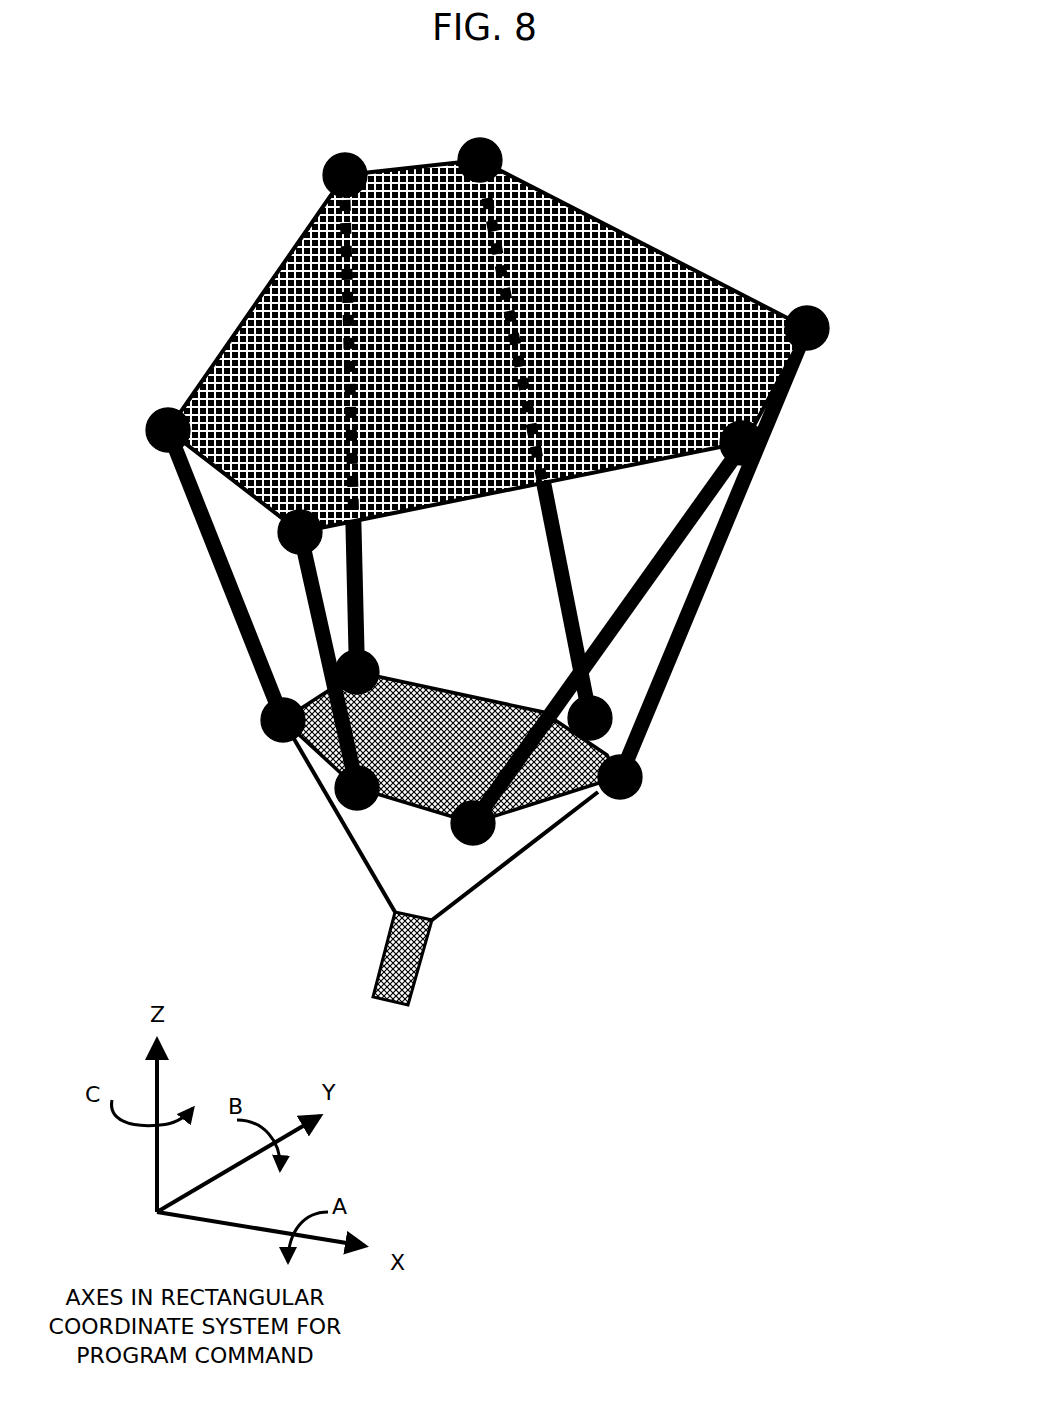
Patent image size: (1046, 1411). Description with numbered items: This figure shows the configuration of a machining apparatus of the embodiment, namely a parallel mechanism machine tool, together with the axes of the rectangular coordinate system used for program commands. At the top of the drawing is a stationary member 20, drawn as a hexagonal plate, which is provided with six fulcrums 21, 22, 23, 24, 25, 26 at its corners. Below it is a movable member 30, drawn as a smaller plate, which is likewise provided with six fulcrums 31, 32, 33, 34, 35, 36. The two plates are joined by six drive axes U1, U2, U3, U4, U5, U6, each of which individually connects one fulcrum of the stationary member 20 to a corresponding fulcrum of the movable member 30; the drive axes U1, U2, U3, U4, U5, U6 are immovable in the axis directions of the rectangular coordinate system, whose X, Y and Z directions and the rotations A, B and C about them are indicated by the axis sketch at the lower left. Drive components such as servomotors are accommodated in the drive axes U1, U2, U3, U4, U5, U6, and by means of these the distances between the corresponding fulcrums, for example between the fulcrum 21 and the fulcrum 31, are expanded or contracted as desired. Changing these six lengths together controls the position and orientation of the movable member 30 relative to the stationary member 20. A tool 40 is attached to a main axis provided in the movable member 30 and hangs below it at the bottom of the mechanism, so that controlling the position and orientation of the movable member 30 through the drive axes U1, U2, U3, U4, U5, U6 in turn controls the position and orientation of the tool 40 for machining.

The stationary member 20 is at (598, 232).
The fulcrum 21 is at (155, 410).
The fulcrum 22 is at (278, 543).
The fulcrum 23 is at (762, 452).
The fulcrum 24 is at (828, 322).
The fulcrum 25 is at (503, 152).
The fulcrum 26 is at (325, 168).
The movable member 30 is at (455, 697).
The fulcrum 31 is at (262, 718).
The fulcrum 32 is at (340, 792).
The fulcrum 33 is at (478, 848).
The fulcrum 34 is at (614, 797).
The fulcrum 35 is at (613, 712).
The fulcrum 36 is at (385, 660).
The tool 40 is at (414, 968).
The drive axis U1 is at (215, 562).
The drive axis U2 is at (312, 618).
The drive axis U3 is at (636, 572).
The drive axis U4 is at (692, 628).
The drive axis U5 is at (548, 572).
The drive axis U6 is at (366, 575).